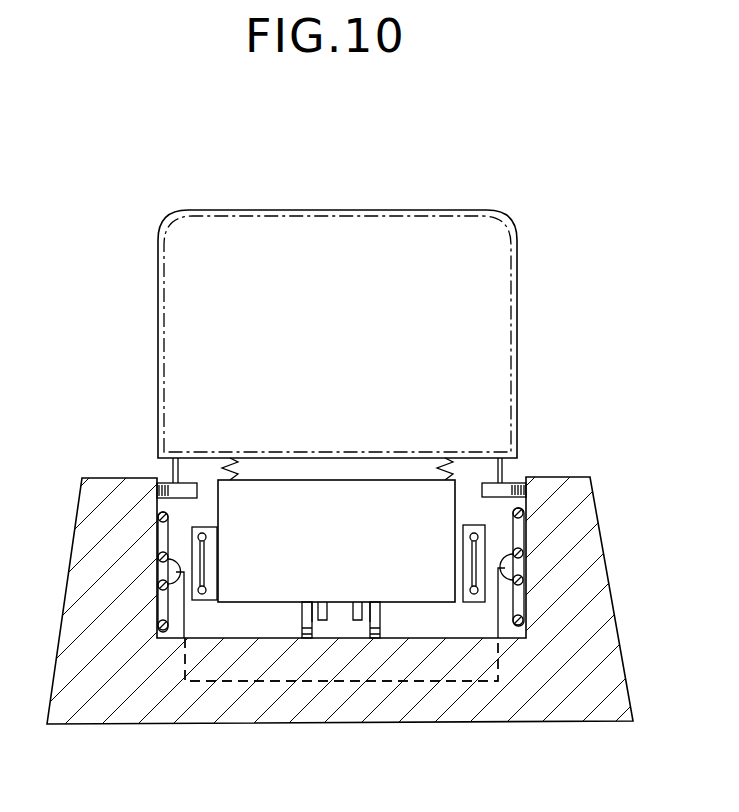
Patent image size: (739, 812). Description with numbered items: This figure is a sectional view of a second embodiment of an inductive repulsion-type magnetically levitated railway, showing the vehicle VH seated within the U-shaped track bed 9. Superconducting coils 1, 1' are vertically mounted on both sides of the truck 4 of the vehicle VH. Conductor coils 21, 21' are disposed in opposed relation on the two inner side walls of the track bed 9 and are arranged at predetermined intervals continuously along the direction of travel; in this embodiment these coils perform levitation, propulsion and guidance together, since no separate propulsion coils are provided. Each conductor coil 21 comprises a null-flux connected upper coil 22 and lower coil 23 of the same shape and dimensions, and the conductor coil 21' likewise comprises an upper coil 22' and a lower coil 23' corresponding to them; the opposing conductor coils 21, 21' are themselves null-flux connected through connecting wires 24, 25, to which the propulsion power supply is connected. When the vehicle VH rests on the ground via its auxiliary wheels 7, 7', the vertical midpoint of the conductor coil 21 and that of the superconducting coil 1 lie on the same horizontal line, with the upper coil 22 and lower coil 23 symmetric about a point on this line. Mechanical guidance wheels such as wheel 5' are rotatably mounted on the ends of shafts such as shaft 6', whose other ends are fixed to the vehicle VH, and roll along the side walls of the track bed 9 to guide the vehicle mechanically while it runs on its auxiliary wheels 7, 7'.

The vehicle VH is at (472, 237).
The truck 4 is at (350, 495).
The shaft 6' is at (376, 437).
The mechanical guidance wheel 5' is at (381, 458).
The conductor coil 21 is at (96, 562).
The conductor coil 21' is at (584, 554).
The upper coil 22 is at (192, 542).
The upper coil 22' is at (485, 539).
The lower coil 23 is at (204, 605).
The lower coil 23' is at (482, 603).
The superconducting coil 1 is at (226, 563).
The superconducting coil 1' is at (448, 563).
The auxiliary wheel 7 is at (291, 688).
The auxiliary wheel 7' is at (359, 688).
The connecting wire 24 is at (452, 683).
The connecting wire 25 is at (341, 719).
The track bed 9 is at (575, 705).